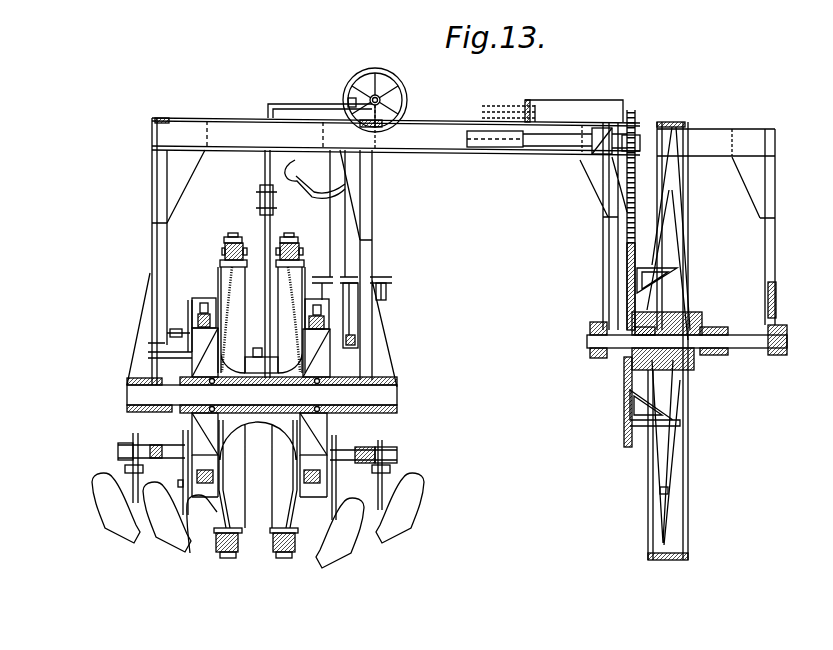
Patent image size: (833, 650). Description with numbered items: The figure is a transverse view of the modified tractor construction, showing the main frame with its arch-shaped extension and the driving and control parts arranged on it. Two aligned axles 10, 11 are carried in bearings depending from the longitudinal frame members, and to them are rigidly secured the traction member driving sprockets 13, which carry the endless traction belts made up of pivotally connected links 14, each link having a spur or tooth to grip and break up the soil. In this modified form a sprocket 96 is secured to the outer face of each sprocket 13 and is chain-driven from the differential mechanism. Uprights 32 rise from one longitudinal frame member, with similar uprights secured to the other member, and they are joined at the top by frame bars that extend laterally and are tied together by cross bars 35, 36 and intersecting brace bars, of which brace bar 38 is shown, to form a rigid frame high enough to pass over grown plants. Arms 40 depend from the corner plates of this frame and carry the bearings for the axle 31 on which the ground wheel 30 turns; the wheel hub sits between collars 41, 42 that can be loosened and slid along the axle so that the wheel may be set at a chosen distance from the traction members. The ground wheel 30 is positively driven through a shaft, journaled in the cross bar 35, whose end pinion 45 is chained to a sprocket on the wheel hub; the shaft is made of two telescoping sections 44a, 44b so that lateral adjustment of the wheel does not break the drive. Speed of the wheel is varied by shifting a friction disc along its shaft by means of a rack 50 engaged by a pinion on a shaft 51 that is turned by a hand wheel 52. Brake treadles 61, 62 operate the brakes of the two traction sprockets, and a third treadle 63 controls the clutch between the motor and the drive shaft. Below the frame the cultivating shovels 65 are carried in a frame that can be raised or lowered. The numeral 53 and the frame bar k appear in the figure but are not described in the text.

The axle 10 is at (155, 395).
The axle 11 is at (355, 396).
The traction member driving sprocket 13 is at (222, 252).
The link 14 is at (235, 238).
The ground wheel 30 is at (676, 526).
The axle 31 is at (766, 347).
The upright 32 is at (371, 247).
The cross bar 35 is at (600, 157).
The cross bar 36 is at (778, 136).
The brace bar 38 is at (585, 97).
The arm 40 is at (603, 257).
The collar 41 is at (612, 347).
The collar 42 is at (700, 334).
The telescoping shaft section 44a is at (500, 148).
The telescoping shaft section 44b is at (560, 141).
The pinion 45 is at (634, 126).
The rack 50 is at (497, 107).
The shaft 51 is at (381, 99).
The hand wheel 52 is at (349, 80).
The upright 53 is at (152, 230).
The brake-actuated treadle 61 is at (299, 290).
The brake-actuated treadle 62 is at (352, 277).
The treadle 63 is at (393, 280).
The cultivating shovel 65 is at (172, 541).
The sprocket 96 is at (200, 310).
The frame bar k is at (160, 364).